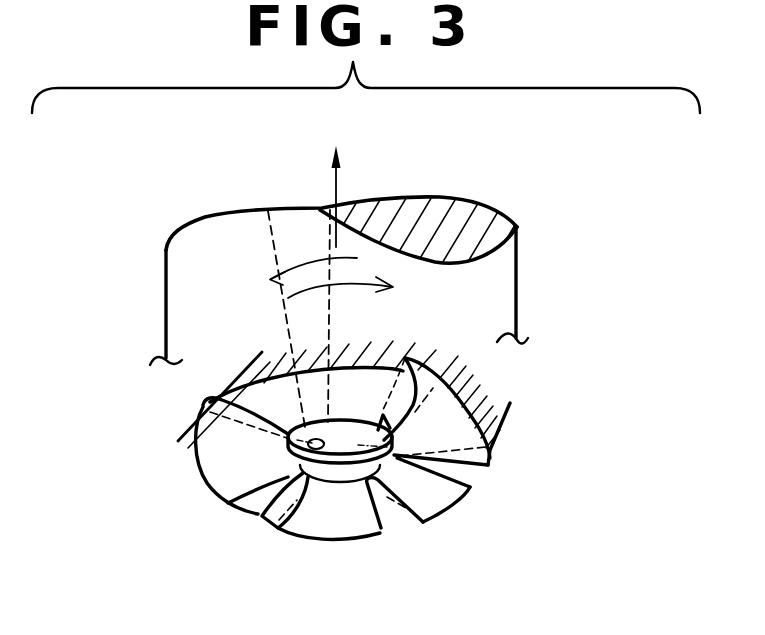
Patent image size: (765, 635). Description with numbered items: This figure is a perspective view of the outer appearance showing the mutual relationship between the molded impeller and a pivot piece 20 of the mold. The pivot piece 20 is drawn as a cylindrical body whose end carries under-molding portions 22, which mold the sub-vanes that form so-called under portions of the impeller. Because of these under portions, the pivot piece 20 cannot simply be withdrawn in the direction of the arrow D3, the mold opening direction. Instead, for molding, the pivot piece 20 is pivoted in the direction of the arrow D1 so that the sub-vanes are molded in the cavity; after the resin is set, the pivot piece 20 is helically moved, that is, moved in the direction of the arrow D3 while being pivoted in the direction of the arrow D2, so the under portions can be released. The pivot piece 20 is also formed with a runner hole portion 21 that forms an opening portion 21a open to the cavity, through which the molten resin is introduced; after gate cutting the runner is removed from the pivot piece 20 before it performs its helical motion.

The pivot piece 20 is at (494, 273).
The runner hole portion 21 is at (272, 235).
The opening portion 21a is at (318, 452).
The under-molding portions 22 is at (457, 356).
The direction of pivoting for molding D1 is at (357, 280).
The direction of pivoting during removal D2 is at (305, 259).
The mold opening direction D3 is at (337, 193).